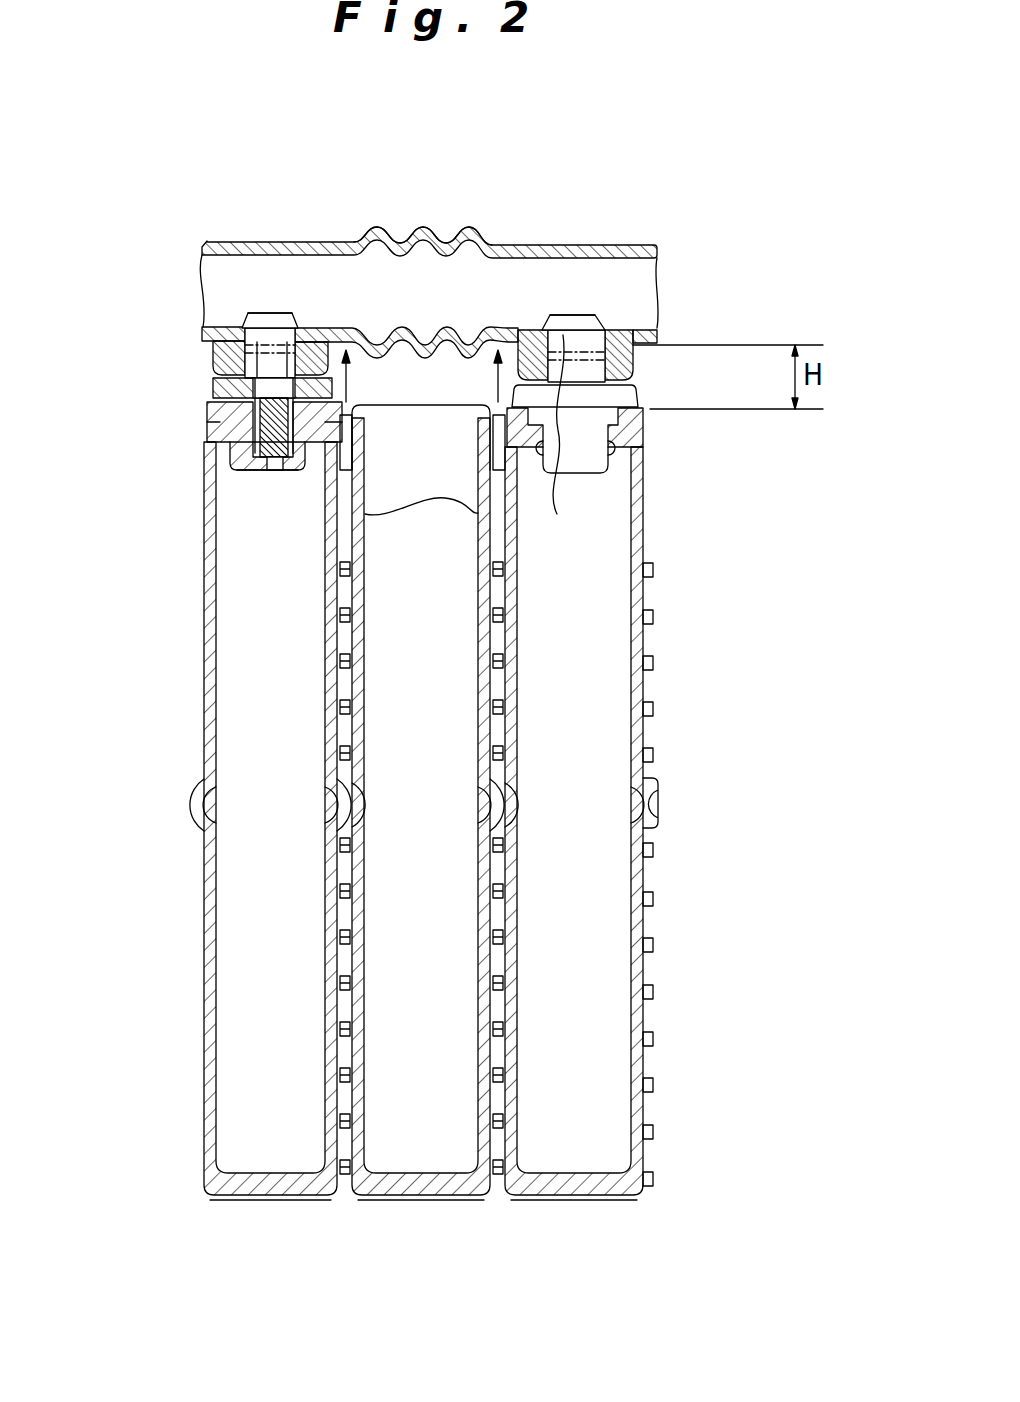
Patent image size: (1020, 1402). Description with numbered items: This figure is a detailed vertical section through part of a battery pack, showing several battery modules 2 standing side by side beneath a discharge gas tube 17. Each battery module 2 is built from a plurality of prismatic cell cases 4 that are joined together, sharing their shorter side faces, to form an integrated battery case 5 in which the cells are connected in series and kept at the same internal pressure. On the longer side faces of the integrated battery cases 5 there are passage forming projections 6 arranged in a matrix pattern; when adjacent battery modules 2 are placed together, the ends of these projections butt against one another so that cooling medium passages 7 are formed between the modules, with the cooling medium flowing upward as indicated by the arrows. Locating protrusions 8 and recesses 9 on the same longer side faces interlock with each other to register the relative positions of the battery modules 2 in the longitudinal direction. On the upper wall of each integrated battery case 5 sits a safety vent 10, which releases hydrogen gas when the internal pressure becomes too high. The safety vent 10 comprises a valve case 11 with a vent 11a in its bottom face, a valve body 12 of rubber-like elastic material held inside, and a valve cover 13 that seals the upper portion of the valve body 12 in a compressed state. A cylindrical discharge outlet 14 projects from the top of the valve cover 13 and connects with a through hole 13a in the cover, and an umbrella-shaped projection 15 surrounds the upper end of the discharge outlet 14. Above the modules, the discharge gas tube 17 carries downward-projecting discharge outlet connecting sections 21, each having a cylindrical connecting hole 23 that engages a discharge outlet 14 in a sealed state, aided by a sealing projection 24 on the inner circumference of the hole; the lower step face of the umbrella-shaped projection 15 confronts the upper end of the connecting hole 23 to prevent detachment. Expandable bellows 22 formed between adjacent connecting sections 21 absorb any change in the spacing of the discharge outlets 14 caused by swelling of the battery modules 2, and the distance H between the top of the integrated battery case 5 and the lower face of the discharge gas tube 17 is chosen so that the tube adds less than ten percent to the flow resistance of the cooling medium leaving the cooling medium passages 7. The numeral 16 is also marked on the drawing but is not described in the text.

The battery module 2 is at (246, 1216).
The prismatic cell case 4 is at (278, 819).
The integrated battery case 5 is at (204, 1198).
The passage forming projection 6 is at (503, 990).
The cooling medium passage 7 is at (357, 631).
The locating protrusion 8 is at (498, 808).
The recess 9 is at (655, 803).
The safety vent 10 is at (204, 384).
The valve case 11 is at (235, 468).
The vent 11a is at (270, 470).
The valve body 12 is at (235, 445).
The valve cover 13 is at (220, 394).
The through hole 13a is at (213, 417).
The discharge outlet 14 is at (271, 335).
The umbrella-shaped projection 15 is at (313, 330).
The frame plate 16 is at (359, 209).
The discharge gas tube 17 is at (538, 245).
The discharge outlet connecting section 21 is at (213, 340).
The expandable bellows 22 is at (424, 229).
The connecting hole 23 is at (554, 440).
The sealing projection 24 is at (246, 305).